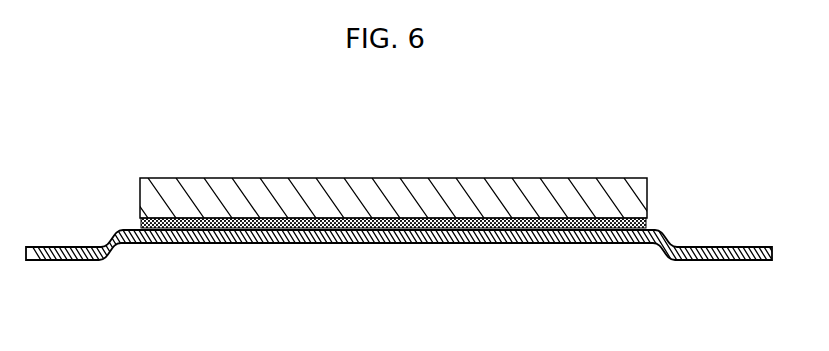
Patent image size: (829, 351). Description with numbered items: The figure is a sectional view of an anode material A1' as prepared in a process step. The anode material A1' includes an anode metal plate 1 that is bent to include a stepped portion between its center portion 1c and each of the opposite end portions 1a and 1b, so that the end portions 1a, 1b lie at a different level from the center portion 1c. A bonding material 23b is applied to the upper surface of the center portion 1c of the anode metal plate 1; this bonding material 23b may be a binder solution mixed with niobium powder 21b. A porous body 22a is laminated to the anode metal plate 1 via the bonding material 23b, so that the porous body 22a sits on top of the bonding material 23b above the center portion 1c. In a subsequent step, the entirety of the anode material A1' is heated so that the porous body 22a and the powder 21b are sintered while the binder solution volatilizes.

The anode material A1' is at (405, 194).
The anode metal plate 1 is at (405, 280).
The end portion 1a is at (68, 257).
The end portion 1b is at (722, 257).
The center portion 1c is at (250, 241).
The niobium powder 21b is at (402, 230).
The porous body 22a is at (380, 200).
The bonding material 23b is at (459, 222).